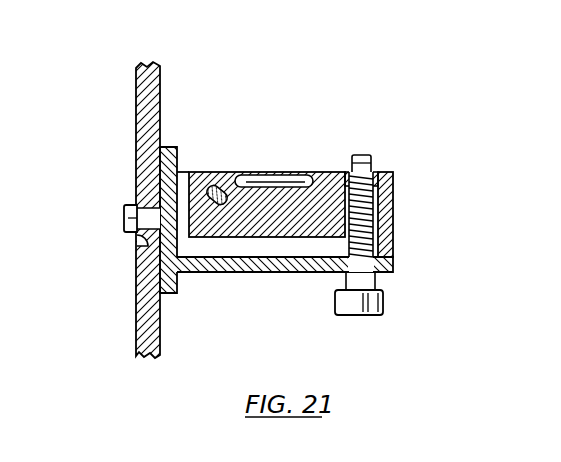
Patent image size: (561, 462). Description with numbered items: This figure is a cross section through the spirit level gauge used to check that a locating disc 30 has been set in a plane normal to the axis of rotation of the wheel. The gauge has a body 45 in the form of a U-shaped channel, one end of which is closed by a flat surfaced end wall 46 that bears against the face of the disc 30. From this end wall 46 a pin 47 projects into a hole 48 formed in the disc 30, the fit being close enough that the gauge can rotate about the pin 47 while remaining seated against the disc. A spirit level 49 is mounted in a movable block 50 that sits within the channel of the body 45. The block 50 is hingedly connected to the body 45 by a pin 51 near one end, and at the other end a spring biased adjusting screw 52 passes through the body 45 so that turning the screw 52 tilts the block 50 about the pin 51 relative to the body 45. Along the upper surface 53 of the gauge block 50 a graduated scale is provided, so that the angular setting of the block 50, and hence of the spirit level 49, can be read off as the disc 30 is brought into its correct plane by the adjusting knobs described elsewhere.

The disc 30 is at (155, 80).
The body 45 is at (285, 260).
The end wall 46 is at (177, 147).
The pin 47 is at (132, 212).
The hole 48 is at (136, 245).
The spirit level 49 is at (300, 173).
The movable block 50 is at (397, 185).
The pin 51 is at (225, 173).
The adjusting screw 52 is at (387, 300).
The upper surface 53 is at (280, 173).